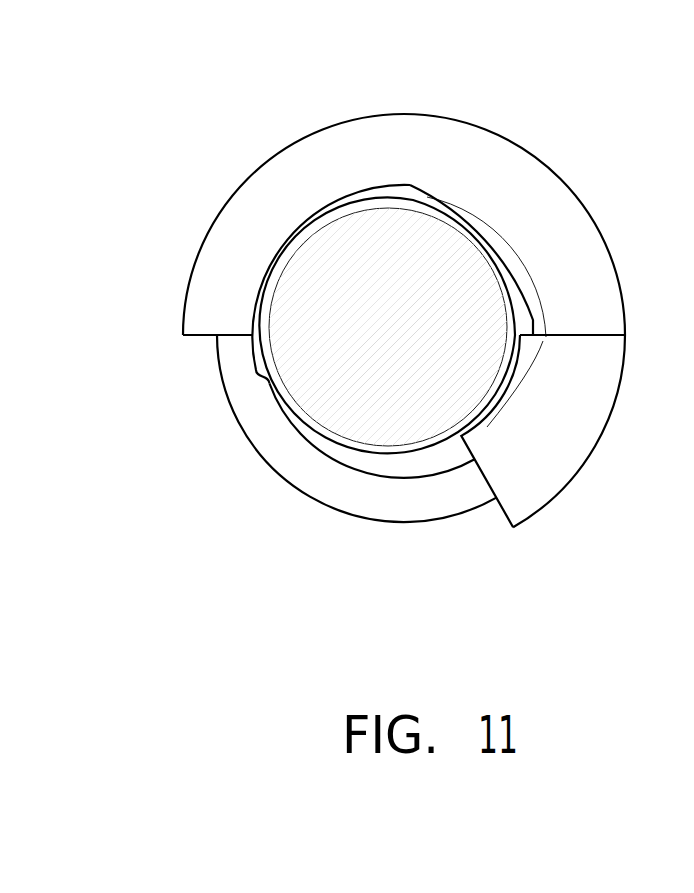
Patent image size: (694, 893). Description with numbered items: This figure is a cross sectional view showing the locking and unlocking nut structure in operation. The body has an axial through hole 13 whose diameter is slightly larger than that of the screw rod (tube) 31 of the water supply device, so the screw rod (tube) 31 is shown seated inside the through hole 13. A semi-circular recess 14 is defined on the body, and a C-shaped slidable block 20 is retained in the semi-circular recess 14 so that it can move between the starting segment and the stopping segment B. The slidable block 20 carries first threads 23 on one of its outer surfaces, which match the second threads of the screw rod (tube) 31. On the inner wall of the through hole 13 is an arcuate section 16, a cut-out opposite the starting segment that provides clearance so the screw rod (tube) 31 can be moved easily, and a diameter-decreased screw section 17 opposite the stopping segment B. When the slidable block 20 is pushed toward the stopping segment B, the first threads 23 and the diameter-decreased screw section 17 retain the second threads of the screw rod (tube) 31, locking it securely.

The through hole 13 is at (426, 468).
The semi-circular recess 14 is at (273, 457).
The arcuate section 16 is at (360, 197).
The diameter-decreased screw section 17 is at (515, 297).
The slidable block 20 is at (592, 420).
The first threads 23 is at (488, 425).
The screw rod (tube) 31 is at (365, 450).
The stopping segment B is at (232, 343).